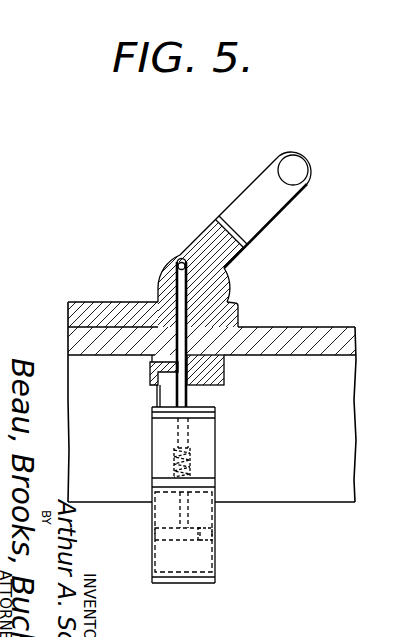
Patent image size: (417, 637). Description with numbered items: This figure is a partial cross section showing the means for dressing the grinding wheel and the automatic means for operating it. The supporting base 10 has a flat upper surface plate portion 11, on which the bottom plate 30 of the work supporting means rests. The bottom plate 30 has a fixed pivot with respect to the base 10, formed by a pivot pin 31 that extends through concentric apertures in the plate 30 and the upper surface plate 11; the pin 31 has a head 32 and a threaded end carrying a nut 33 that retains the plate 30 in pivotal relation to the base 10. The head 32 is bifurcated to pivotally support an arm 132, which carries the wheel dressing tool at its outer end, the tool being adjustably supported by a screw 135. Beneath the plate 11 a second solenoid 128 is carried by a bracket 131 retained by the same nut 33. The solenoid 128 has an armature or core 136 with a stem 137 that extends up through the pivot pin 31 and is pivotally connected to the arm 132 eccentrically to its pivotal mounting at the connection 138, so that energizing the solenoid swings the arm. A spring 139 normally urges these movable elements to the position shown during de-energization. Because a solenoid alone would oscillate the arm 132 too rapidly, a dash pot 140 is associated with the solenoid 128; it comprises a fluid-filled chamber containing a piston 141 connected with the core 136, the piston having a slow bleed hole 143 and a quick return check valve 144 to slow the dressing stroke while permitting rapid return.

The supporting base 10 is at (348, 428).
The upper surface plate portion 11 is at (357, 343).
The bottom plate 30 is at (108, 303).
The pivot pin 31 is at (204, 318).
The head 32 is at (221, 283).
The nut 33 is at (227, 380).
The second solenoid 128 is at (158, 430).
The bracket 131 is at (150, 383).
The arm 132 is at (265, 211).
The screw 135 is at (295, 170).
The armature or core 136 is at (215, 468).
The stem 137 is at (178, 393).
The pivotal connection 138 is at (176, 262).
The spring 139 is at (177, 468).
The dash pot 140 is at (215, 540).
The piston 141 is at (202, 531).
The slow bleed hole 143 is at (204, 542).
The quick return check valve 144 is at (173, 540).